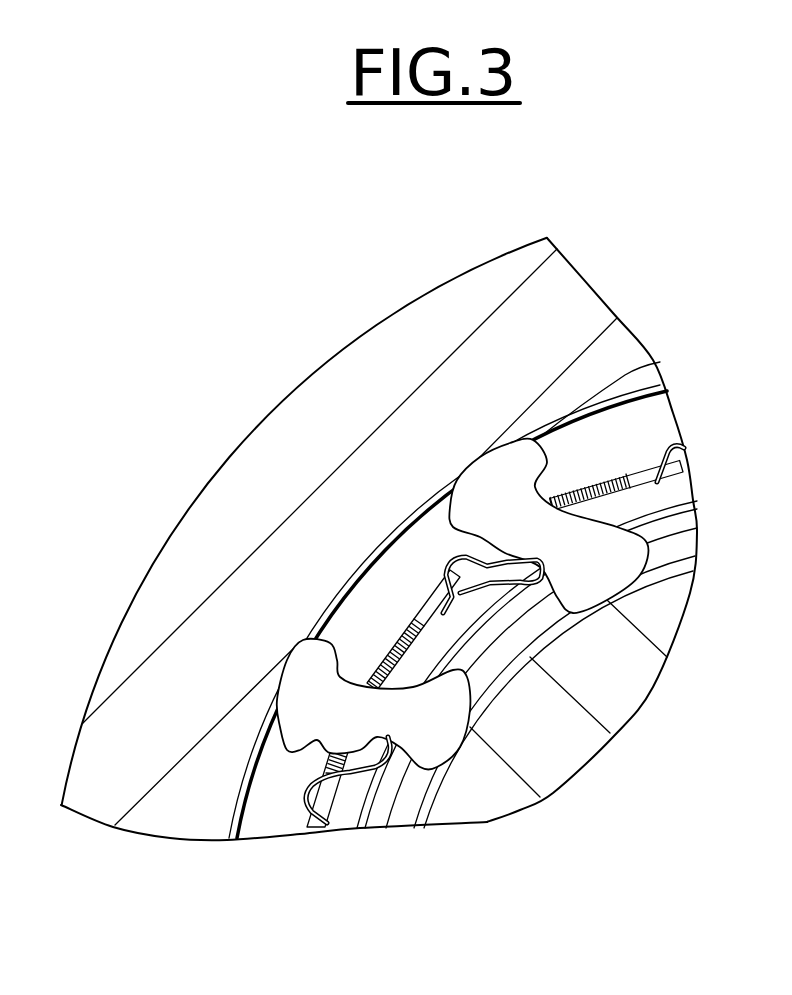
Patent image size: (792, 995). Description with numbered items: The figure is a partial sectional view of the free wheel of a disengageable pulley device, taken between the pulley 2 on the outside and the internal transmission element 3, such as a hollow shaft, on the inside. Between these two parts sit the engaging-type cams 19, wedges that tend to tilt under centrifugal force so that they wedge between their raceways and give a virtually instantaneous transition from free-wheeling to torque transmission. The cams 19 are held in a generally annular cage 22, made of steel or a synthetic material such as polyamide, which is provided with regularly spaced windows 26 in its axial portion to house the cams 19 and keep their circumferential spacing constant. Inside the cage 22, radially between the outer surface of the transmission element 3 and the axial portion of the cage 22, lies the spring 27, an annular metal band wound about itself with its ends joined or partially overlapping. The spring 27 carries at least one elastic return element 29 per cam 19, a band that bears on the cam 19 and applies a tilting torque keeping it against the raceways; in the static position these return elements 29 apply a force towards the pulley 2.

The pulley 2 is at (573, 298).
The internal transmission element 3 is at (623, 673).
The cams 19 is at (660, 362).
The cage 22 is at (402, 622).
The windows 26 is at (650, 460).
The spring 27 is at (438, 551).
The elastic return element 29 is at (530, 585).